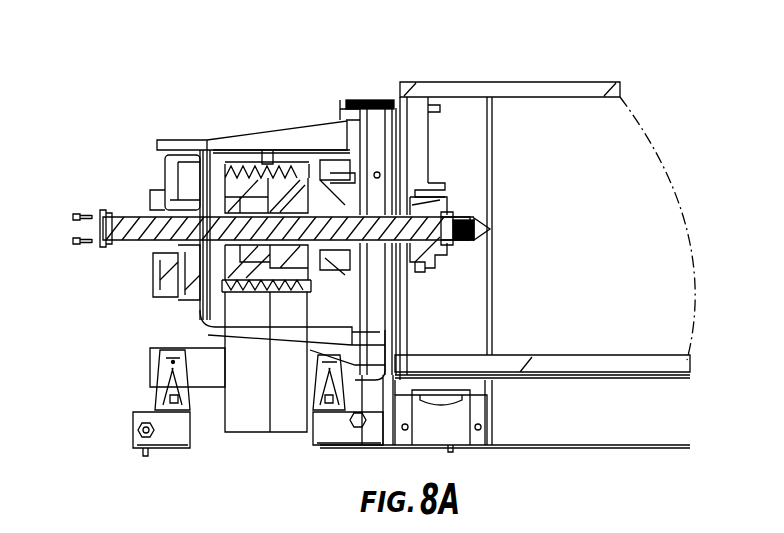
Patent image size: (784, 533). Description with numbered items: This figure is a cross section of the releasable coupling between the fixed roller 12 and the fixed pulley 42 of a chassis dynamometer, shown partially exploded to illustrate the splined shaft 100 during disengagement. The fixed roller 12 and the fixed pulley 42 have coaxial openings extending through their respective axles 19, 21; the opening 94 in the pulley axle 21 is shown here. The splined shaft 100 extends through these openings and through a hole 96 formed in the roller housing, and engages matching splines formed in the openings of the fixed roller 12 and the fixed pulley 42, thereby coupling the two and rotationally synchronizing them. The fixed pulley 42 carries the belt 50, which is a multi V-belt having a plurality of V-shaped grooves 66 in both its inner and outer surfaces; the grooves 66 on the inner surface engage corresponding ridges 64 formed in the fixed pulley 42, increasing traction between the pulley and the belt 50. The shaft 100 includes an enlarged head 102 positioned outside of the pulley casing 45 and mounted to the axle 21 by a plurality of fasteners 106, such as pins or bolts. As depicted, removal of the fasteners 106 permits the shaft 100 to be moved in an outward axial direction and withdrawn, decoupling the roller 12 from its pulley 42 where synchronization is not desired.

The fixed roller 12 is at (612, 152).
The fixed roller axle 19 is at (466, 212).
The fixed pulley axle 21 is at (182, 198).
The fixed pulley 42 is at (250, 185).
The adjustable pulley casing 45 is at (160, 347).
The belt 50 is at (266, 165).
The ridges 64 is at (272, 292).
The V-shaped grooves 66 is at (285, 170).
The opening 94 is at (196, 325).
The hole 96 is at (408, 200).
The splined shaft 100 is at (115, 216).
The enlarged head 102 is at (105, 246).
The fasteners 106 is at (72, 218).